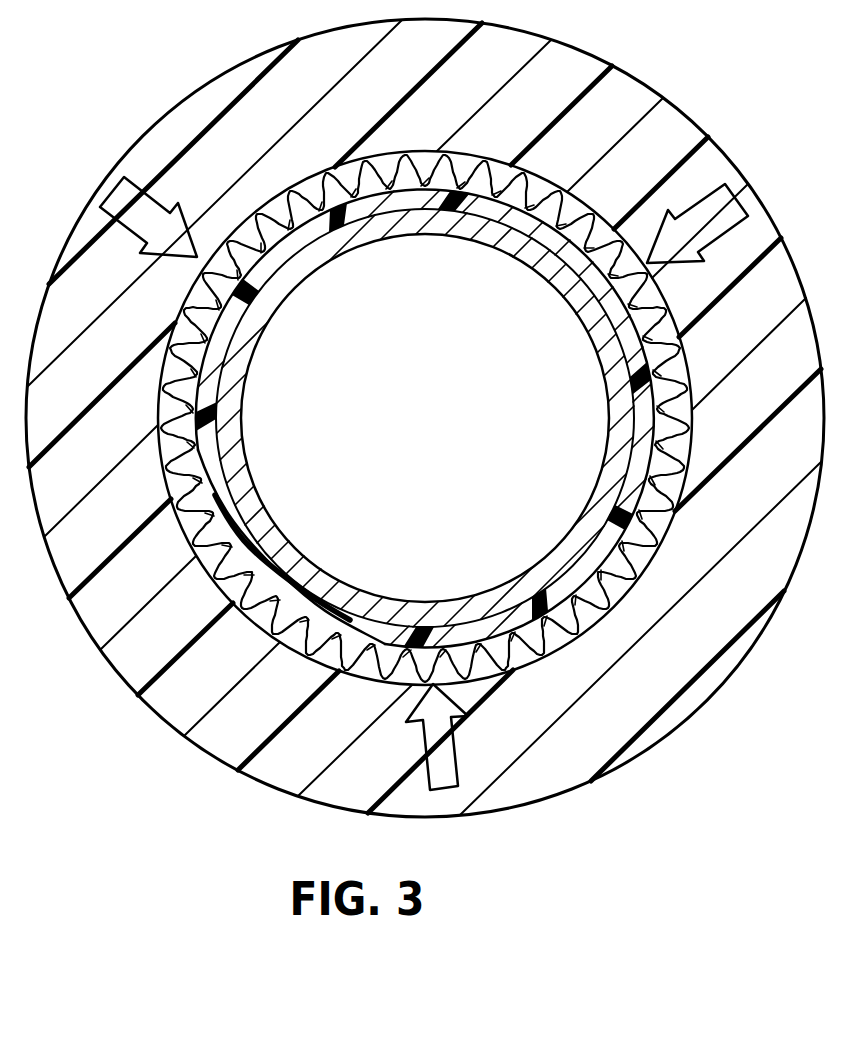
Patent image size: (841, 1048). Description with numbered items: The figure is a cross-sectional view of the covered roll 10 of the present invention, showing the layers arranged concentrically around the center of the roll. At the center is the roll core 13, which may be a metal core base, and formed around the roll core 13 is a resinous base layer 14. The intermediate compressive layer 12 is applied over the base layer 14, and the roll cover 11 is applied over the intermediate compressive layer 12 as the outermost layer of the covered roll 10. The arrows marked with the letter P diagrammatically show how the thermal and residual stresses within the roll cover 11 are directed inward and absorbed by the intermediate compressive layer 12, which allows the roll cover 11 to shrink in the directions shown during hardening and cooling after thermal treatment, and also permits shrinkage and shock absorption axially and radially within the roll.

The covered roll 10 is at (425, 411).
The roll cover 11 is at (632, 96).
The intermediate compressive layer 12 is at (626, 588).
The roll core 13 is at (329, 584).
The resinous base layer 14 is at (372, 212).